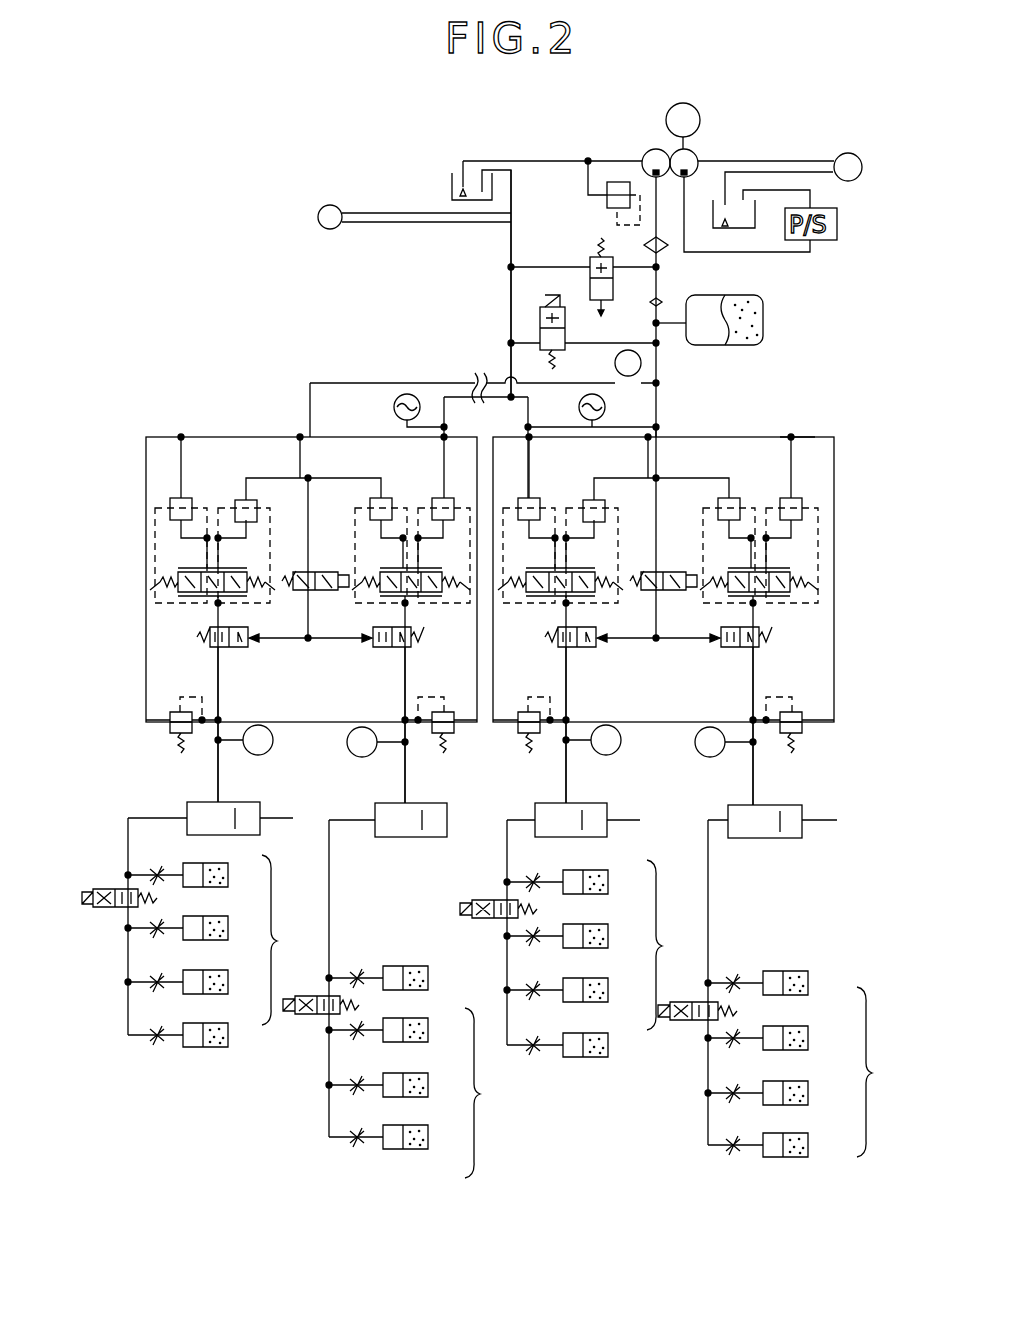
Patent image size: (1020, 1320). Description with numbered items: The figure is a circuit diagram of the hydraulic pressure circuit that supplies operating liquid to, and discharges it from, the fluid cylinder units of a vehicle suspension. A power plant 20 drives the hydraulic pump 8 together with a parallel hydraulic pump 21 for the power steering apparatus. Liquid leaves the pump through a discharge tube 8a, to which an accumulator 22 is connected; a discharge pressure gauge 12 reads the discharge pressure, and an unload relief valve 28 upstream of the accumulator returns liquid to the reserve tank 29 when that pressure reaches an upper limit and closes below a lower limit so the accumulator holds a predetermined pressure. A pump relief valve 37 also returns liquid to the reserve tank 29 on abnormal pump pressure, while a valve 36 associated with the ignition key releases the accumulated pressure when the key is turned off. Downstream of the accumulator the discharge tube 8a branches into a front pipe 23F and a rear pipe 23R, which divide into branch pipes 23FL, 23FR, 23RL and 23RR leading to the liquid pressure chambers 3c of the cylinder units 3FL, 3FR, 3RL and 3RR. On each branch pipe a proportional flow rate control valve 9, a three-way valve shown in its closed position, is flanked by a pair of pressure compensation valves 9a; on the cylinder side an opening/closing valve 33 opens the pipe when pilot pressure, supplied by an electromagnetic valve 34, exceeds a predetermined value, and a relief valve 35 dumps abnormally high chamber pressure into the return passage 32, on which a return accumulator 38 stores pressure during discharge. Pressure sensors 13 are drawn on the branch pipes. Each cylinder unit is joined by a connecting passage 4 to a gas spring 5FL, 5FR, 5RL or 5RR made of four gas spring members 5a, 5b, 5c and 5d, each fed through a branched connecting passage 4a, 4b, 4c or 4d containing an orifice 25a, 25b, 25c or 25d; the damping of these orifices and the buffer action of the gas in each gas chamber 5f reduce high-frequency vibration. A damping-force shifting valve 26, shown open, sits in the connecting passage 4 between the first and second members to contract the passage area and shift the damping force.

The power plant 20 is at (701, 118).
The hydraulic pump for power steering apparatus 21 is at (700, 159).
The hydraulic pump 8 is at (645, 152).
The discharge tube 8a is at (656, 361).
The reserve tank 29 is at (452, 194).
The pump relief valve 37 is at (607, 207).
The unload relief valve 28 is at (590, 268).
The return passage 32 is at (511, 275).
The valve associated with ignition key 36 is at (540, 330).
The discharge pressure gauge 12 is at (615, 364).
The accumulator 22 is at (763, 318).
The pipe on the rear wheel side 23R is at (331, 377).
The pipe on the front wheel side 23F is at (662, 431).
The return accumulator 38 is at (394, 407).
The pressure compensation valve 9a is at (188, 500).
The proportional flow rate control valve 9 is at (236, 596).
The electromagnetic valve 34 is at (322, 592).
The opening/closing valve 33 is at (216, 648).
The relief valve 35 is at (487, 748).
The pressure sensor 13 is at (273, 741).
The right-hand branch pipe on the right-hand rear wheel side 23RR is at (219, 680).
The left-hand branch pipe on the left-hand rear wheel side 23RL is at (405, 708).
The right-hand branch pipe on the right-hand front wheel side 23FR is at (567, 680).
The left-hand branch pipe on the left-hand front wheel side 23FL is at (753, 708).
The liquid cylinder unit 3RR is at (261, 808).
The liquid cylinder unit 3RL is at (448, 804).
The liquid cylinder unit 3FR is at (608, 810).
The liquid cylinder unit 3FL is at (803, 810).
The liquid pressure chamber 3c is at (189, 836).
The connecting passage 4 is at (127, 860).
The branched connecting passage 4a is at (716, 980).
The branched connecting passage 4b is at (708, 1040).
The branched connecting passage 4c is at (708, 1094).
The branched connecting passage 4d is at (708, 1146).
The gas spring member 5a is at (230, 855).
The gas spring member 5b is at (230, 909).
The gas spring member 5c is at (230, 962).
The gas spring member 5d is at (230, 1015).
The gas chamber 5f is at (798, 1157).
The orifice 25a is at (157, 883).
The orifice 25b is at (157, 937).
The orifice 25c is at (157, 990).
The orifice 25d is at (158, 1045).
The damping-force shifting valve 26 is at (90, 908).
The gas spring 5RR is at (296, 940).
The gas spring 5RL is at (496, 1093).
The gas spring 5FR is at (677, 945).
The gas spring 5FL is at (885, 1072).